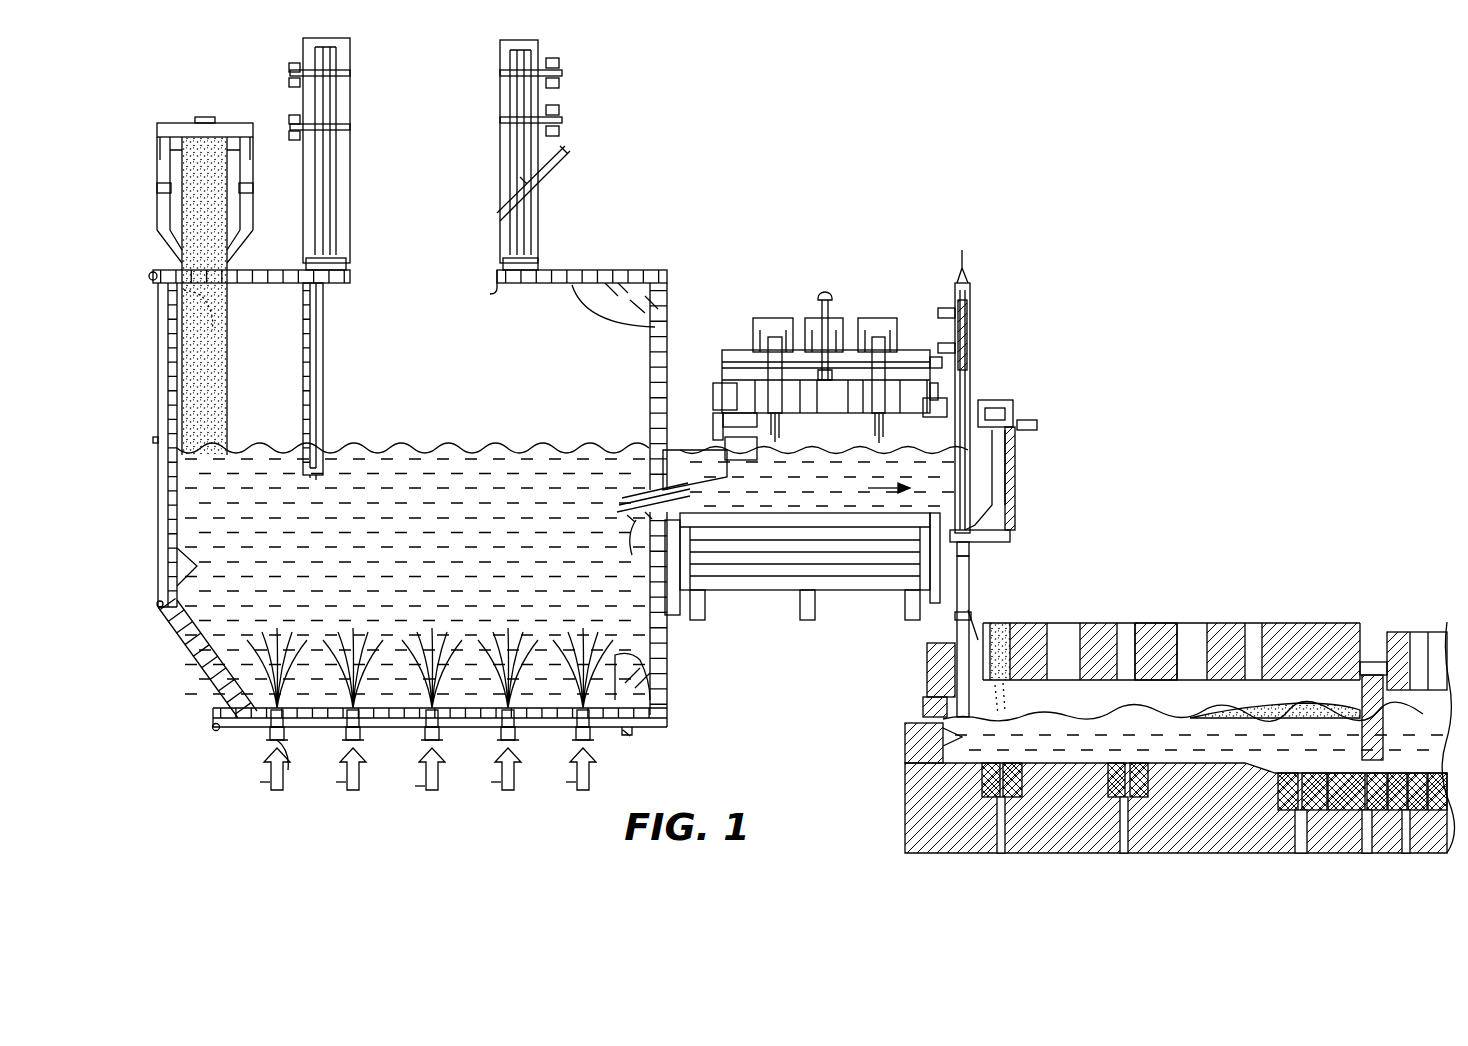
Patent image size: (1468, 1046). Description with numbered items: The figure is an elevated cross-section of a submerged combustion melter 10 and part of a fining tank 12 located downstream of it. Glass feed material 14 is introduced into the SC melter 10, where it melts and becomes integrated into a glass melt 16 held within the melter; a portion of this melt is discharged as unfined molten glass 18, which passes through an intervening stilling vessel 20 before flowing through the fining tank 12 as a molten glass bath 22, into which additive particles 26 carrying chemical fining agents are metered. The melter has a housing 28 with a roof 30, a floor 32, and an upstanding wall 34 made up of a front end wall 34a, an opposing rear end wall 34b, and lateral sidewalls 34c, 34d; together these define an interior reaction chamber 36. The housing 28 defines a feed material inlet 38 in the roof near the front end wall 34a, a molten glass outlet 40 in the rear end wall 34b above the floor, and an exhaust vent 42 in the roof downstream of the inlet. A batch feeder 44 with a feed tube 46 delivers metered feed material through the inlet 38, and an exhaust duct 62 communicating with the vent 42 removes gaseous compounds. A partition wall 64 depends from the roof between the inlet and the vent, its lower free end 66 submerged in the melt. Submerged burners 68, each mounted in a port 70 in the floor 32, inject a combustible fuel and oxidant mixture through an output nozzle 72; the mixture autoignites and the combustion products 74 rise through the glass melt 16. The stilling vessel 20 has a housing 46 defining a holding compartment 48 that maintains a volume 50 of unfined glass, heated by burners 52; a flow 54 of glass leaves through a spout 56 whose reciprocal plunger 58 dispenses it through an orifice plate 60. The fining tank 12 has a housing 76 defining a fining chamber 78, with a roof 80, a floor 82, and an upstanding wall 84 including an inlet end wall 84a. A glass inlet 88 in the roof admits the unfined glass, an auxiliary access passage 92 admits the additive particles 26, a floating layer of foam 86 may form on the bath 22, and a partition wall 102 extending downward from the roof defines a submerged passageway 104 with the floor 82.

The submerged combustion melter 10 is at (579, 420).
The fining tank 12 is at (1143, 709).
The glass feed material 14 is at (185, 308).
The glass melt 16 is at (410, 512).
The unfined molten glass 18 is at (655, 490).
The stilling vessel 20 is at (816, 445).
The molten glass bath 22 is at (1200, 752).
The additive particles 26 is at (1171, 622).
The housing 28 is at (416, 477).
The roof 30 is at (558, 285).
The floor 32 is at (390, 735).
The upstanding wall 34 is at (160, 490).
The front end wall 34a is at (177, 515).
The rear end wall 34b is at (662, 292).
The lateral sidewall 34c is at (652, 685).
The lateral sidewall 34d is at (640, 300).
The interior reaction chamber 36 is at (158, 600).
The feed material inlet 38 is at (215, 290).
The molten glass outlet 40 is at (630, 556).
The exhaust vent 42 is at (497, 286).
The batch feeder 44 is at (160, 175).
The feed tube 46 is at (215, 160).
The holding compartment 48 is at (838, 500).
The volume of unfined molten glass 50 is at (885, 476).
The burners 52 is at (875, 355).
The flow of unfined molten glass 54 is at (970, 565).
The spout 56 is at (1007, 407).
The reciprocal plunger 58 is at (965, 395).
The orifice plate 60 is at (1010, 515).
The exhaust duct 62 is at (338, 165).
The partition wall 64 is at (322, 310).
The lower free end 66 is at (315, 478).
The submerged burners 68 is at (417, 659).
The port 70 is at (285, 742).
The output nozzle 72 is at (285, 705).
The combustion products 74 is at (270, 645).
The housing 76 is at (898, 828).
The fining chamber 78 is at (1145, 732).
The roof 80 is at (1155, 625).
The floor 82 is at (1195, 853).
The upstanding wall 84 is at (902, 755).
The inlet end wall 84a is at (905, 728).
The floating layer of foam 86 is at (1268, 716).
The glass inlet 88 is at (948, 606).
The auxiliary access passage 92 is at (998, 625).
The partition wall 102 is at (1374, 662).
The submerged passageway 104 is at (1385, 775).